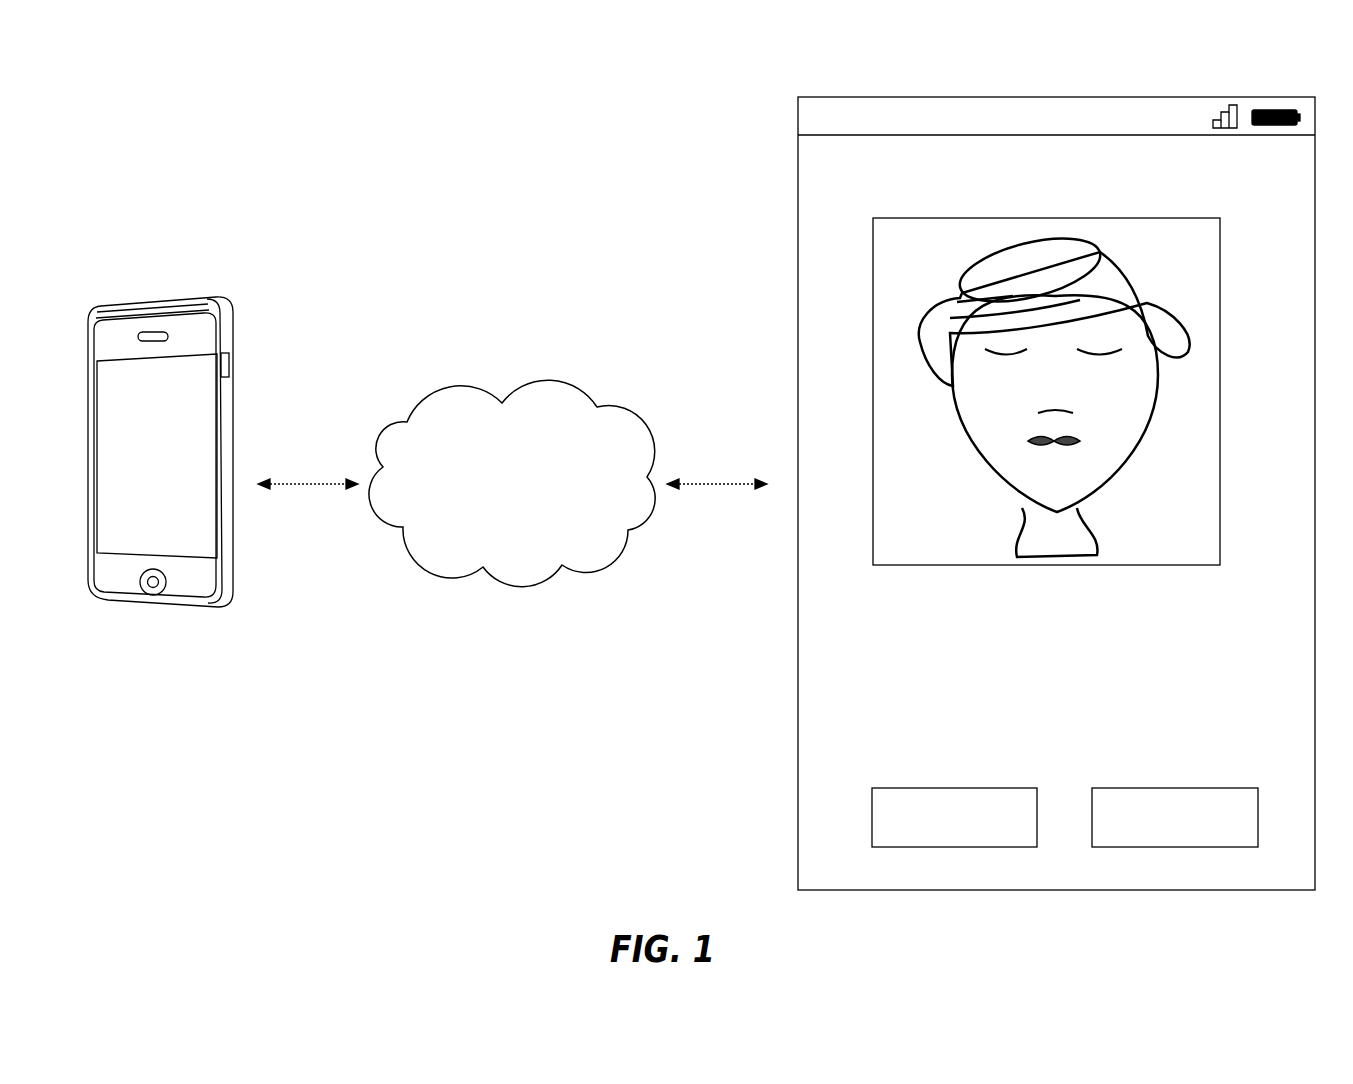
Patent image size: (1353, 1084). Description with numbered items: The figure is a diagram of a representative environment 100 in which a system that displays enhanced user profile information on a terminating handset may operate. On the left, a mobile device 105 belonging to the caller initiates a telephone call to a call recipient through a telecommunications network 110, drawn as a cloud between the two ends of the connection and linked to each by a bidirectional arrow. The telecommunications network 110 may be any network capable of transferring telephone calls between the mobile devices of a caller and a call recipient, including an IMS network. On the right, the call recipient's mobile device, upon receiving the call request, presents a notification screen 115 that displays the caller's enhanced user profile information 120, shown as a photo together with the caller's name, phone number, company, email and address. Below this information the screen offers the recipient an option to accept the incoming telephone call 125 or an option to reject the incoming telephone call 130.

The environment 100 is at (137, 104).
The mobile device 105 is at (160, 439).
The telecommunications network 110 is at (512, 483).
The notification screen 115 is at (1056, 481).
The enhanced user profile information 120 is at (1078, 391).
The option to accept the incoming telephone call 125 is at (1175, 831).
The option to reject the incoming telephone call 130 is at (955, 831).